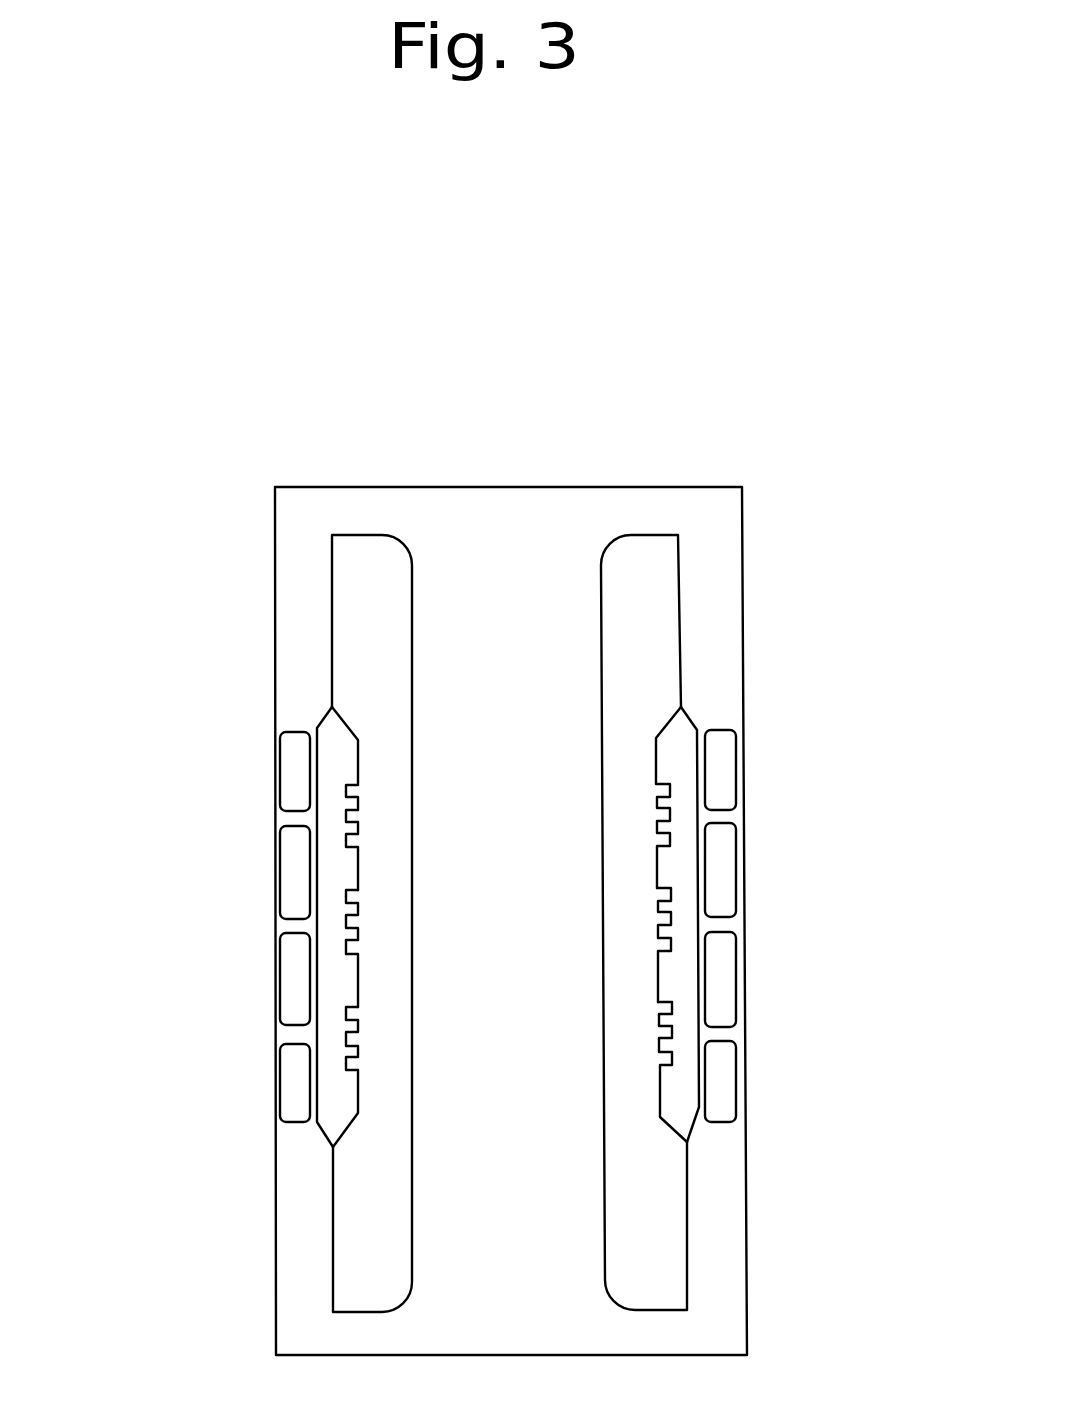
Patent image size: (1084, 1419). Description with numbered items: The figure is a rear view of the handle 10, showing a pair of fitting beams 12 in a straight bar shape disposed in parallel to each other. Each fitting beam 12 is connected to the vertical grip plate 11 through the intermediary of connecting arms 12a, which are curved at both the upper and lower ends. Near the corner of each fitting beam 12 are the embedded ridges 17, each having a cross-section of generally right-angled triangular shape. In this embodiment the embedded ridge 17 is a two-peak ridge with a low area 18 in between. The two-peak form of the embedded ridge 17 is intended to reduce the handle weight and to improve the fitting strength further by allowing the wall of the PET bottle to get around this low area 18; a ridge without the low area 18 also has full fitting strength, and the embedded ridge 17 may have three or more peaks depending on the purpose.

The sensor element 10 is at (697, 428).
The vertical grip plate 11 is at (530, 703).
The fitting beam 12 is at (278, 865).
The connecting arm 12a is at (295, 600).
The embedded ridge 17 is at (335, 800).
The low area 18 is at (337, 928).